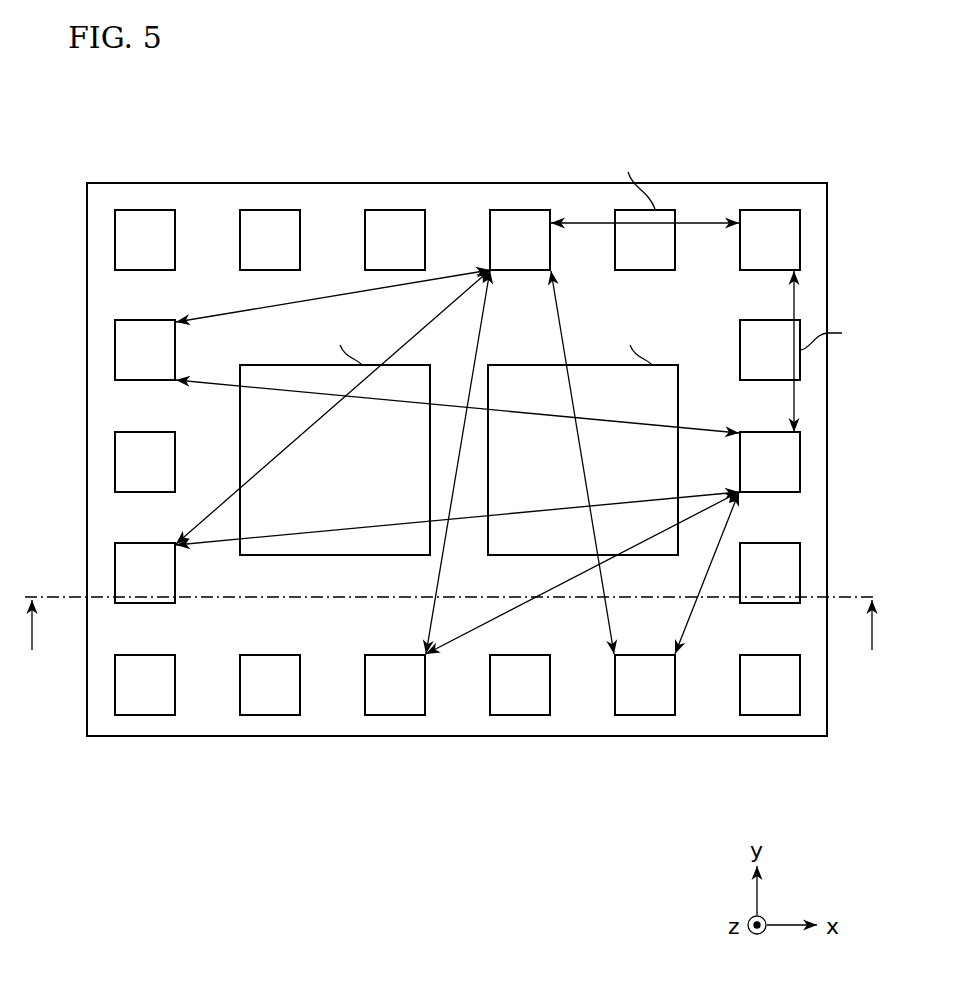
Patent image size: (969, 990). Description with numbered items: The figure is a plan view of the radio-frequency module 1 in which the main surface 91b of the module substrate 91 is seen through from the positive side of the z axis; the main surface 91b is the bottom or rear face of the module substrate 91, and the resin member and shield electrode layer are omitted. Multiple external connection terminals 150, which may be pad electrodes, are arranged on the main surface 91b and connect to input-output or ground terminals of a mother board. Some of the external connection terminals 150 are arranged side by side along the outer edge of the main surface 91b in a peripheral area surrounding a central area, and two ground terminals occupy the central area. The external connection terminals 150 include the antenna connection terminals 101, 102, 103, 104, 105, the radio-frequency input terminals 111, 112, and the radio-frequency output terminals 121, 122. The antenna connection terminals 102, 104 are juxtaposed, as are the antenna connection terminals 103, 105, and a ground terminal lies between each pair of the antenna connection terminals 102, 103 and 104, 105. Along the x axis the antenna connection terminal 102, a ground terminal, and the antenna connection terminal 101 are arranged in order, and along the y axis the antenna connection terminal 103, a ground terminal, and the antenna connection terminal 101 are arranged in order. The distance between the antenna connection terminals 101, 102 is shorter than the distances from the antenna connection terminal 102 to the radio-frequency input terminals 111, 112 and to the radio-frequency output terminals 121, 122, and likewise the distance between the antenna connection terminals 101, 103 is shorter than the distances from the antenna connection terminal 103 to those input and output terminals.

The radio-frequency module 1 is at (808, 140).
The module substrate 91 is at (305, 183).
The main surface 91b is at (210, 200).
The antenna connection terminal 101 is at (800, 240).
The antenna connection terminal 102 is at (528, 209).
The antenna connection terminal 103 is at (800, 462).
The antenna connection terminal 104 is at (393, 209).
The antenna connection terminal 105 is at (800, 573).
The radio-frequency input terminal 111 is at (115, 345).
The radio-frequency input terminal 112 is at (115, 568).
The radio-frequency output terminal 121 is at (392, 715).
The radio-frequency output terminal 122 is at (640, 715).
The external connection terminals 150 is at (457, 464).